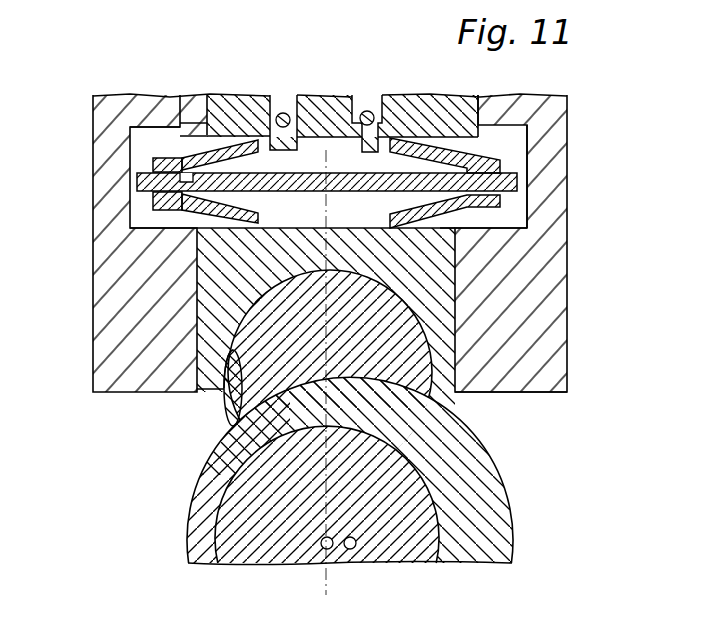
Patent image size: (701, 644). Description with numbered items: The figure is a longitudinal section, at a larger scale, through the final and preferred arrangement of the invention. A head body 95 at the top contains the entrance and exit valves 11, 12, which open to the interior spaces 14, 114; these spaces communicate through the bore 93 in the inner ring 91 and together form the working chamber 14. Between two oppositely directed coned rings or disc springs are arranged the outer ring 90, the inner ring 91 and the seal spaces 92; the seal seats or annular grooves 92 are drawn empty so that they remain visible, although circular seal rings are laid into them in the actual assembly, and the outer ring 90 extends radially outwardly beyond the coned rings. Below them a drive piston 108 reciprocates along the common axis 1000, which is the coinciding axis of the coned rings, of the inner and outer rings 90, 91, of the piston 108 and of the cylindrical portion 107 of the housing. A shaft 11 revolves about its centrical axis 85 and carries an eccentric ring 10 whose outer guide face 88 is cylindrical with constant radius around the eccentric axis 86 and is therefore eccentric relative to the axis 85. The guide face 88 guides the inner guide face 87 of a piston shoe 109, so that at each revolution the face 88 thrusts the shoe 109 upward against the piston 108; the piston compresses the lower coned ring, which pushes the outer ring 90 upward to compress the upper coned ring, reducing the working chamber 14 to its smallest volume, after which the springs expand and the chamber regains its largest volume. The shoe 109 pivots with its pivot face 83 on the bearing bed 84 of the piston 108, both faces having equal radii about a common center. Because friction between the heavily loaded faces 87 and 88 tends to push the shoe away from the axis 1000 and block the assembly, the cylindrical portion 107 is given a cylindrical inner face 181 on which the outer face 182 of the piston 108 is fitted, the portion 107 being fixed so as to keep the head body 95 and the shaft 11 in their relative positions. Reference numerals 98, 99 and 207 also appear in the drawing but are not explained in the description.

The eccentric ring 10 is at (483, 496).
The shaft 11 is at (294, 114).
The exit valve 12 is at (378, 114).
The interior space / working chamber 14 is at (247, 160).
The pivot face 83 is at (420, 318).
The bearing bed 84 is at (232, 412).
The centrical axis 85 is at (325, 549).
The eccentric axis 86 is at (352, 549).
The inner guide face 87 is at (250, 455).
The outer guide face 88 is at (483, 442).
The outer ring 90 is at (135, 181).
The inner ring 91 is at (462, 156).
The seal seat 92 is at (178, 158).
The bore 93 is at (290, 280).
The head body 95 is at (470, 97).
The layer 98 is at (300, 243).
The left housing block 99 is at (292, 226).
The cylindrical portion 107 is at (565, 262).
The drive piston 108 is at (440, 292).
The piston shoe 109 is at (400, 343).
The interior space 114 is at (445, 215).
The cylindrical inner face 181 is at (212, 400).
The outer face 182 is at (242, 320).
The cavity wall 207 is at (512, 222).
The common axis 1000 is at (262, 296).